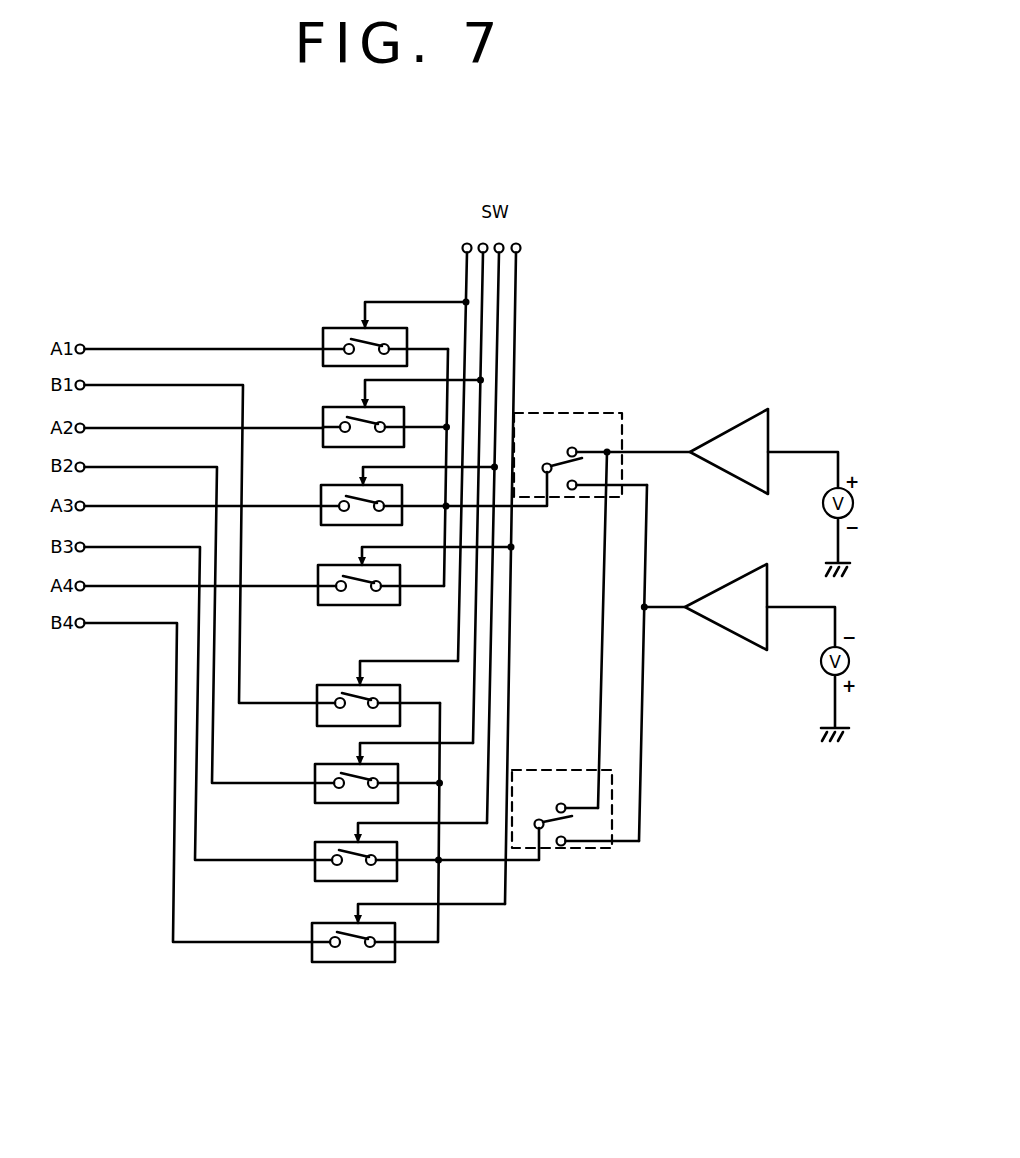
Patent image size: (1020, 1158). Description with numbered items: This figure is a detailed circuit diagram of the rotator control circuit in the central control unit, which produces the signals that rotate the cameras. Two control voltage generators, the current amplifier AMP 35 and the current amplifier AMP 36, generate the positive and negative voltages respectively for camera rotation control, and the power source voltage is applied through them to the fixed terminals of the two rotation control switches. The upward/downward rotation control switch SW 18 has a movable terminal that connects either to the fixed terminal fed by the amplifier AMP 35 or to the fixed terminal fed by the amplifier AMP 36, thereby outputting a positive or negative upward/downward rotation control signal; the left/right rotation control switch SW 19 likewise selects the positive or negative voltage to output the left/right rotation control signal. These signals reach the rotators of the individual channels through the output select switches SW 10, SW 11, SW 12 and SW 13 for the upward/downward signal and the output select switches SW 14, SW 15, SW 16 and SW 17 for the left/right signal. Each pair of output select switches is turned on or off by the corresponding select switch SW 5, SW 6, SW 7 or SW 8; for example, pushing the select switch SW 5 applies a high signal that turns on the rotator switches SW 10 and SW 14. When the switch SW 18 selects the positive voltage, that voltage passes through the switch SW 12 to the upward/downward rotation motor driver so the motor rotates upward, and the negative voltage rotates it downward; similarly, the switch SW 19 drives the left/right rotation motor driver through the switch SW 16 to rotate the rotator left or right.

The select switch 5 is at (465, 442).
The select switch 6 is at (480, 483).
The select switch 7 is at (495, 523).
The select switch 8 is at (513, 564).
The output select switch 10 is at (394, 334).
The output select switch 11 is at (402, 413).
The output select switch 12 is at (408, 496).
The output select switch 13 is at (414, 576).
The output select switch 14 is at (387, 693).
The output select switch 15 is at (394, 773).
The output select switch 16 is at (401, 852).
The output select switch 17 is at (408, 933).
The upward/downward rotation control switch 18 is at (567, 497).
The left/right rotation control switch 19 is at (556, 848).
The control voltage generator 35 is at (729, 451).
The control voltage generator 36 is at (726, 607).